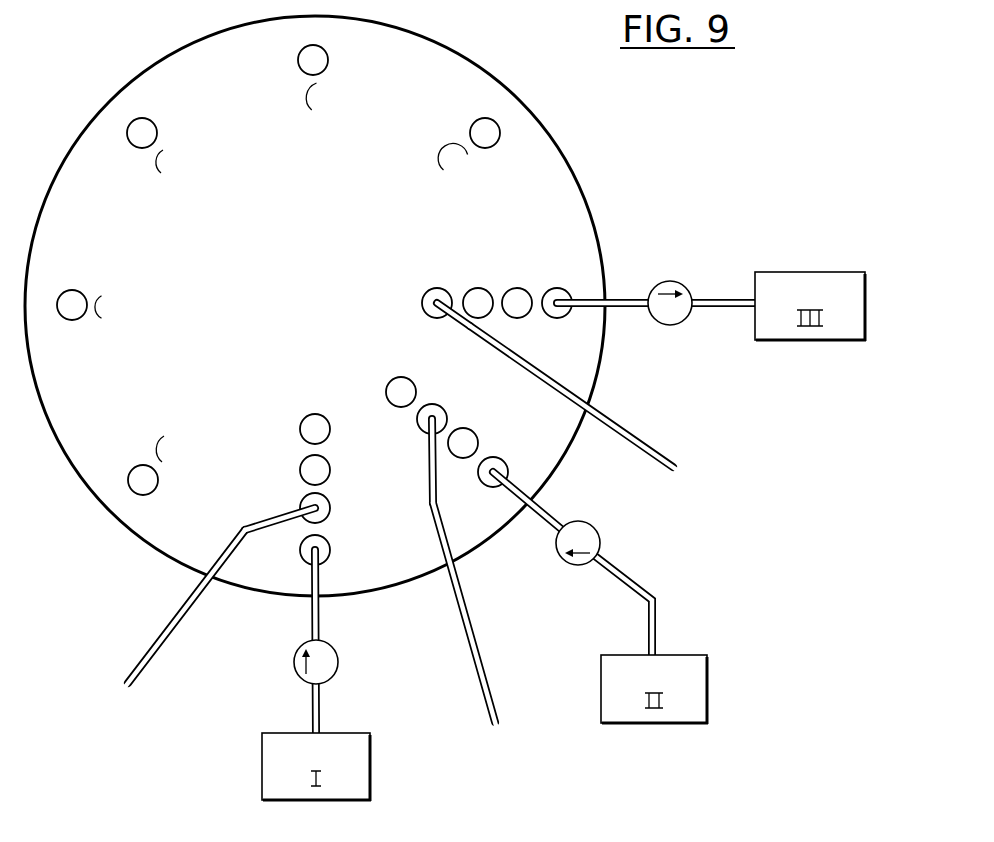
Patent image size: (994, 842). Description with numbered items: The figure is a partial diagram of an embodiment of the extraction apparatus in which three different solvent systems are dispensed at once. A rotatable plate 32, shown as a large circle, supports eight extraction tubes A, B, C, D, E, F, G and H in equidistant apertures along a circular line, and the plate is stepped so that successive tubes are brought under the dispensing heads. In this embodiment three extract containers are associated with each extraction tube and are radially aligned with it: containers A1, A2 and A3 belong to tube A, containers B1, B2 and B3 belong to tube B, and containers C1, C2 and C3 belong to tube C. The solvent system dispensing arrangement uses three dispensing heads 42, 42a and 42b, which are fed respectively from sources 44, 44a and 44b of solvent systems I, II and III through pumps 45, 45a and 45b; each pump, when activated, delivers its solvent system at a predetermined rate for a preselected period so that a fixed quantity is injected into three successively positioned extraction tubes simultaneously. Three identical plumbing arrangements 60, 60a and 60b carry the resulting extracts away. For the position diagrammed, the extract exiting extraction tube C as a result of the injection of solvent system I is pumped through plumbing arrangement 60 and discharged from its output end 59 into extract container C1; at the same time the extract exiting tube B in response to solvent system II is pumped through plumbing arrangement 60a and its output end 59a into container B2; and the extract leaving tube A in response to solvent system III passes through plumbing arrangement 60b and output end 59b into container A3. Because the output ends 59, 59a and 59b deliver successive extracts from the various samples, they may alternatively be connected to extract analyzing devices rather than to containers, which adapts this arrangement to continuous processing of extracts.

The rotatable plate 32 is at (571, 170).
The dispensing head 42 is at (322, 601).
The dispensing head 42a is at (517, 482).
The dispensing head 42b is at (578, 301).
The source of solvent system 44 is at (371, 780).
The source of solvent system 44a is at (706, 711).
The source of solvent system 44b is at (818, 275).
The pump 45 is at (331, 667).
The pump 45a is at (599, 543).
The pump 45b is at (673, 282).
The output end 59 is at (220, 585).
The output end 59a is at (454, 573).
The output end 59b is at (533, 386).
The plumbing arrangement 60 is at (203, 592).
The plumbing arrangement 60a is at (488, 649).
The plumbing arrangement 60b is at (642, 441).
The extraction tube A is at (557, 288).
The extract container A1 is at (517, 288).
The extract container A2 is at (478, 288).
The extract container A3 is at (437, 288).
The extraction tube B is at (507, 469).
The extract container B1 is at (474, 433).
The extract container B2 is at (442, 410).
The extract container B3 is at (413, 393).
The extraction tube C is at (329, 548).
The extract container C1 is at (329, 506).
The extract container C2 is at (330, 470).
The extract container C3 is at (328, 433).
The extraction tube D is at (144, 492).
The extraction tube E is at (73, 290).
The extraction tube F is at (152, 122).
The extraction tube G is at (329, 62).
The extraction tube H is at (474, 123).